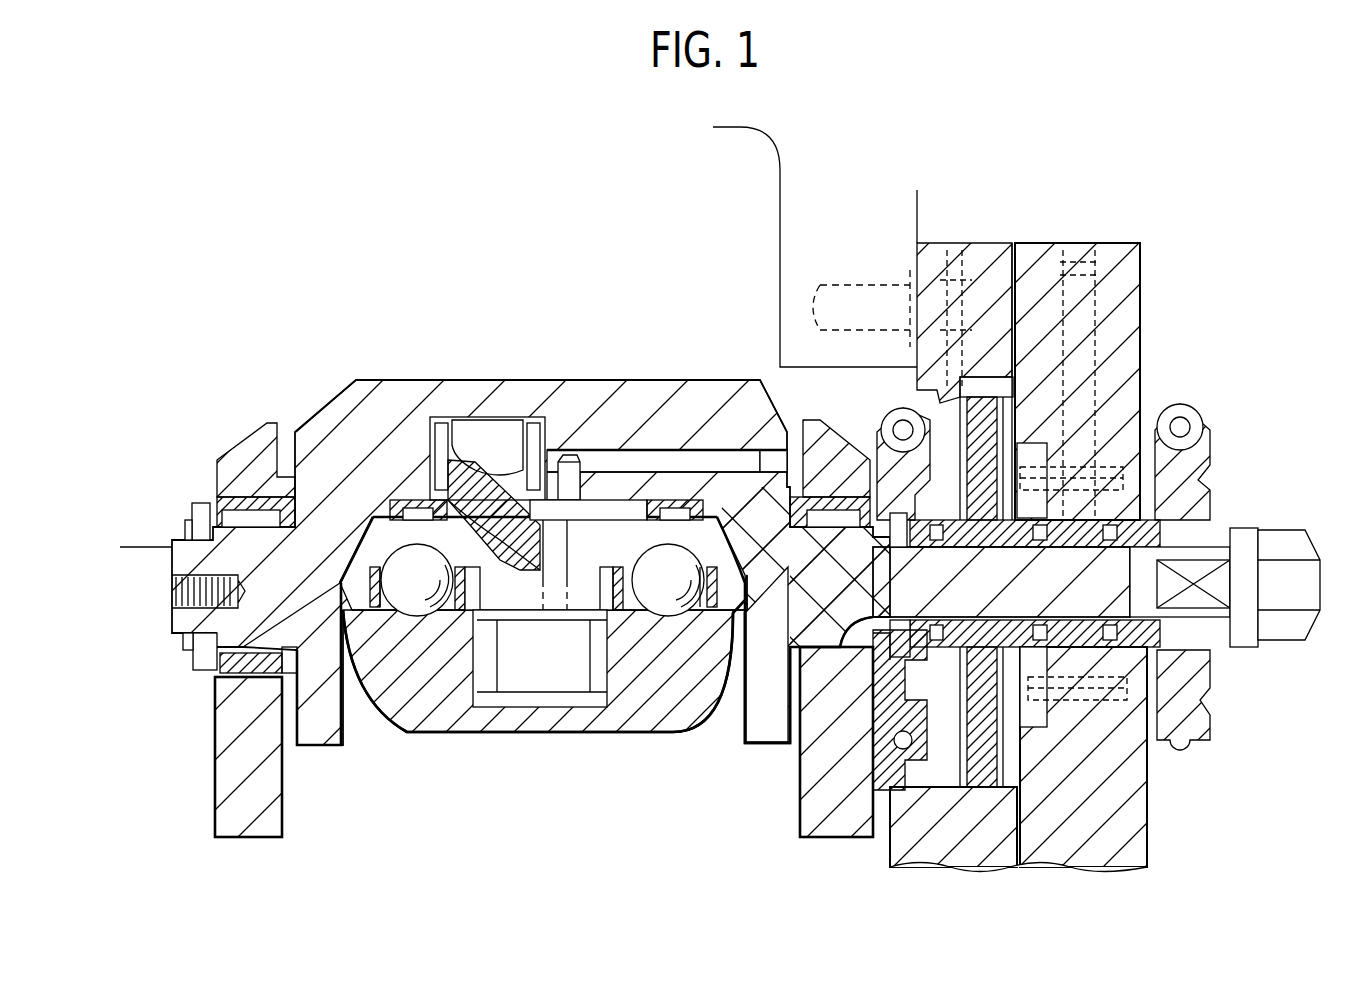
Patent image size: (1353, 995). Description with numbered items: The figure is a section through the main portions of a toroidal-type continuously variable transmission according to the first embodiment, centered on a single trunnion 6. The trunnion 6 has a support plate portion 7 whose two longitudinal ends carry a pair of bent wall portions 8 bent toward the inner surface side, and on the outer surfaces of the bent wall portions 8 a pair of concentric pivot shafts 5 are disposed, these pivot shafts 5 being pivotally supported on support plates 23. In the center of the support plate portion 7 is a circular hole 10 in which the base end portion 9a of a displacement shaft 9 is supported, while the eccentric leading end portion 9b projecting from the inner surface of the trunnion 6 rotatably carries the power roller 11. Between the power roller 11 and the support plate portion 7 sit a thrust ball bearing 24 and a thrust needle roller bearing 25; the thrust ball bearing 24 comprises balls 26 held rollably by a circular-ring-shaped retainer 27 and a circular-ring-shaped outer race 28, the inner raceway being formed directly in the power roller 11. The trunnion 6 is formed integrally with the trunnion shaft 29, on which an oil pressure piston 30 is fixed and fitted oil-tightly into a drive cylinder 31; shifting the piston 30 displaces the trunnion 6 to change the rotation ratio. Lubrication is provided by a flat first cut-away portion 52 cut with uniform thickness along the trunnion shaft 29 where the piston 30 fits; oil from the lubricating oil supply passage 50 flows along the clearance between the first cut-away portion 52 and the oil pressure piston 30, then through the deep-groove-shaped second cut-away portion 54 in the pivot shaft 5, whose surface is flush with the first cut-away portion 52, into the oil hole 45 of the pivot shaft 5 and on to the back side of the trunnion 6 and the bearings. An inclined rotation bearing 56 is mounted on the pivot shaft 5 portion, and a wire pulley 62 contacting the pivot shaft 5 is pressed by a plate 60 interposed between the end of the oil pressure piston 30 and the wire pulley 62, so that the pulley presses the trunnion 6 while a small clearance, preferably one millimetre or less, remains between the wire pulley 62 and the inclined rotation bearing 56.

The pivot shaft 5 is at (253, 545).
The trunnion 6 is at (356, 372).
The support plate portion 7 is at (568, 400).
The bent wall portion 8 is at (320, 567).
The displacement shaft 9 is at (510, 500).
The base end portion 9a is at (480, 440).
The leading end portion 9b is at (507, 690).
The circular hole 10 is at (468, 430).
The power roller 11 is at (626, 720).
The support plate 23 is at (252, 820).
The thrust ball bearing 24 is at (667, 605).
The thrust needle roller bearing 25 is at (630, 500).
The ball 26 is at (412, 500).
The retainer 27 is at (345, 540).
The outer race 28 is at (698, 545).
The trunnion shaft 29 is at (1117, 600).
The oil pressure piston 30 is at (977, 395).
The drive cylinder 31 is at (1018, 405).
The oil hole 45 is at (725, 470).
The lubricating oil supply passage 50 is at (1097, 323).
The first cut-away portion 52 is at (1150, 545).
The second cut-away portion 54 is at (853, 640).
The inclined rotation bearing 56 is at (210, 510).
The plate 60 is at (855, 635).
The wire pulley 62 is at (948, 395).